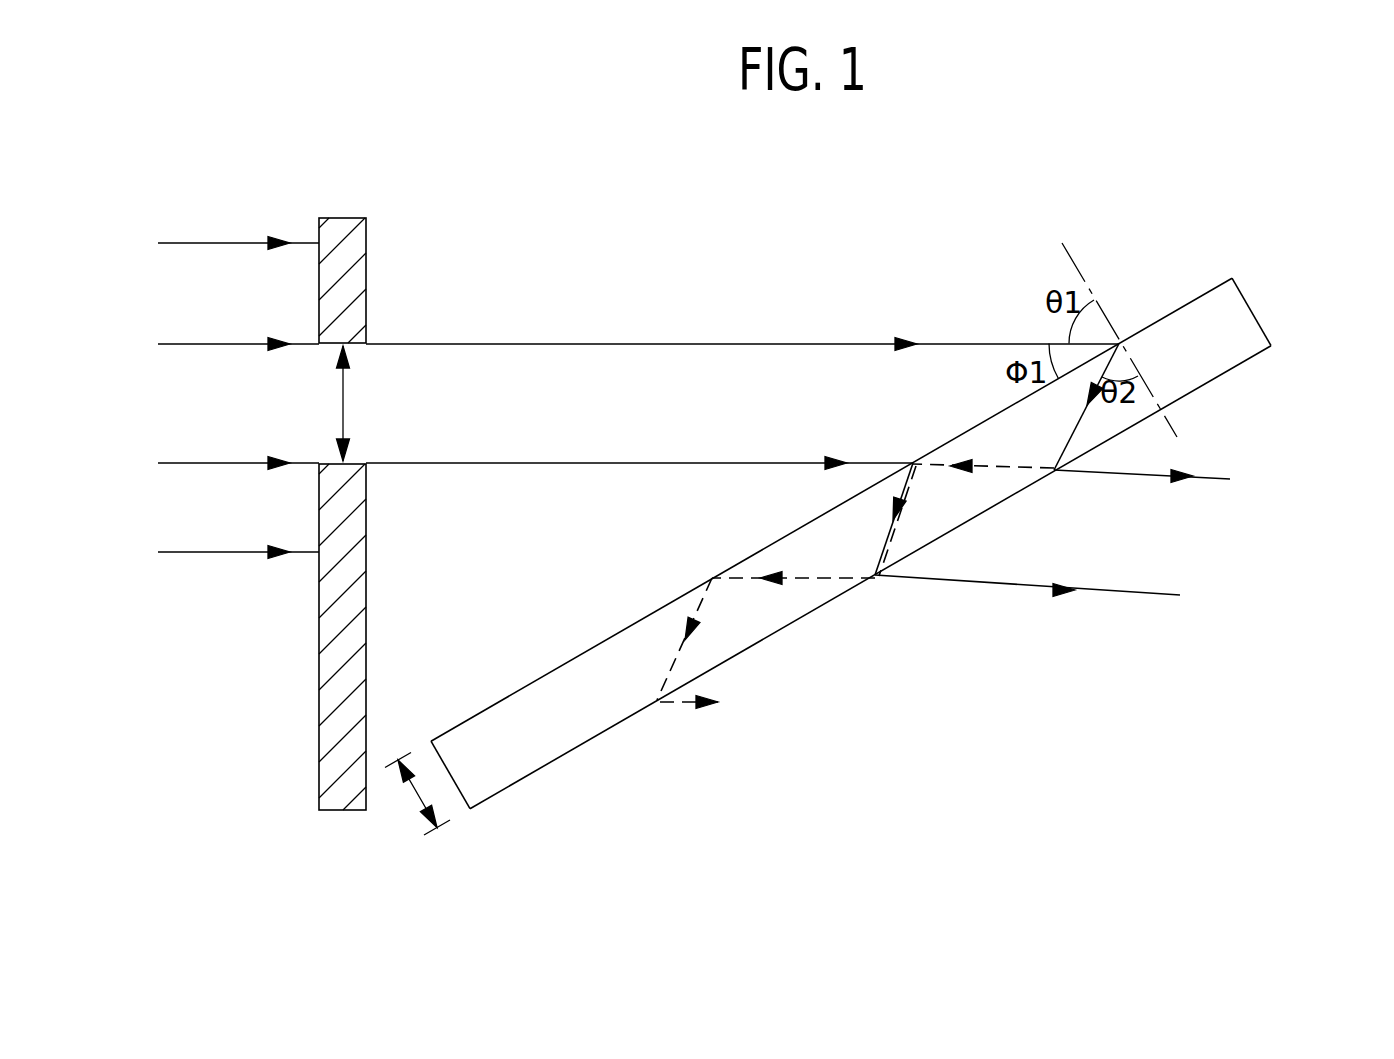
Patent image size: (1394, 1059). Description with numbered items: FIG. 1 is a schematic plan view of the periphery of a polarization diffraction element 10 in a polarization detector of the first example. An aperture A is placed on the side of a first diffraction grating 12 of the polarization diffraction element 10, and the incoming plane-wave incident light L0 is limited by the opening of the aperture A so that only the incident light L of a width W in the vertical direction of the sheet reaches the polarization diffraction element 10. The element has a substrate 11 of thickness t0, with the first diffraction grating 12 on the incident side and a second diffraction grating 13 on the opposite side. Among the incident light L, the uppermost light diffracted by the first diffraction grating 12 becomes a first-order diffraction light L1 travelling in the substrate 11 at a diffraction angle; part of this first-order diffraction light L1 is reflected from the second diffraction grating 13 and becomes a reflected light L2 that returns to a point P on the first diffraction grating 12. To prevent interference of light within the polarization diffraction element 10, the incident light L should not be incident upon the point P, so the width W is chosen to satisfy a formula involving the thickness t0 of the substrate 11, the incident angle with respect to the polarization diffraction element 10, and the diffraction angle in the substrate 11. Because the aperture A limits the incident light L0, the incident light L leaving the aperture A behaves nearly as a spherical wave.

The polarization diffraction element 10 is at (898, 539).
The substrate 11 is at (478, 777).
The first diffraction grating 12 is at (1190, 301).
The second diffraction grating 13 is at (1242, 362).
The aperture A is at (366, 280).
The incident light L is at (728, 344).
The incident light (plane wave) L0 is at (205, 552).
The first-order diffraction light L1 is at (1067, 445).
The reflected light L2 is at (992, 470).
The point P is at (913, 458).
The width W is at (361, 403).
The thickness of substrate t0 is at (414, 794).